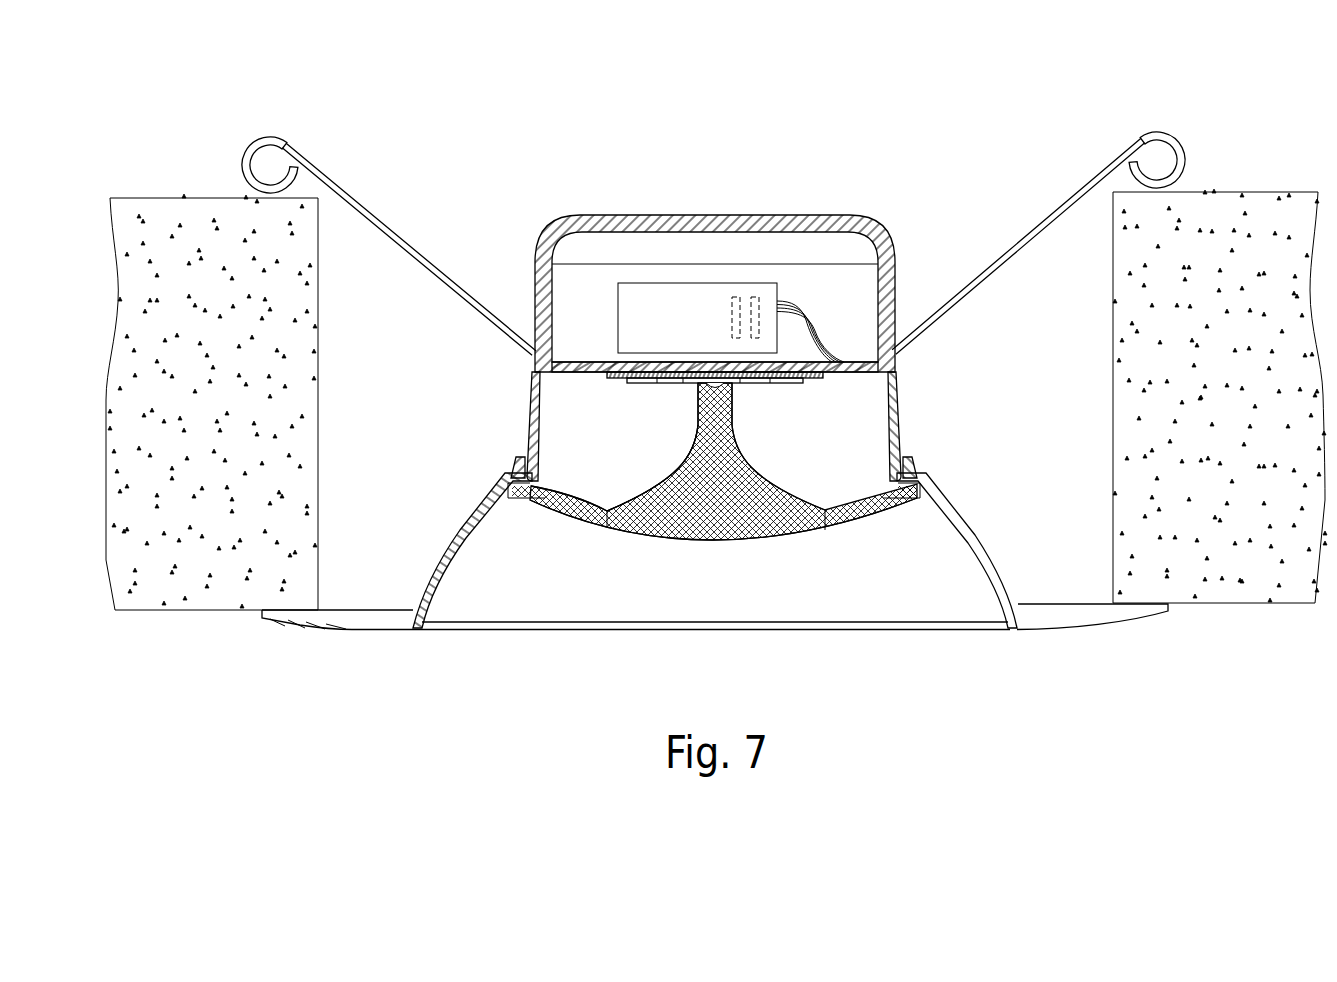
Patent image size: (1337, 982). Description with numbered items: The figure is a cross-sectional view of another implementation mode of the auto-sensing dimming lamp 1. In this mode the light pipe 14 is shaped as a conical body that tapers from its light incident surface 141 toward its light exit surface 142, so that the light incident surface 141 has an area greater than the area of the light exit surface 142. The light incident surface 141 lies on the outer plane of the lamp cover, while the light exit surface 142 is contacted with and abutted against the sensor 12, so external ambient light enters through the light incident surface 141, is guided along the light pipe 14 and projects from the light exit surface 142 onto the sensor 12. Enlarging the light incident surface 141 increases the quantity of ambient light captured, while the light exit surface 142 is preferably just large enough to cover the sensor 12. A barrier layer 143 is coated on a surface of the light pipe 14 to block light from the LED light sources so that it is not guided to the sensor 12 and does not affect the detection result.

The auto-sensing dimming lamp 1 is at (228, 62).
The sensor 12 is at (697, 390).
The light pipe 14 is at (760, 505).
The light incident surface 141 is at (716, 540).
The light exit surface 142 is at (735, 396).
The barrier layer 143 is at (667, 478).